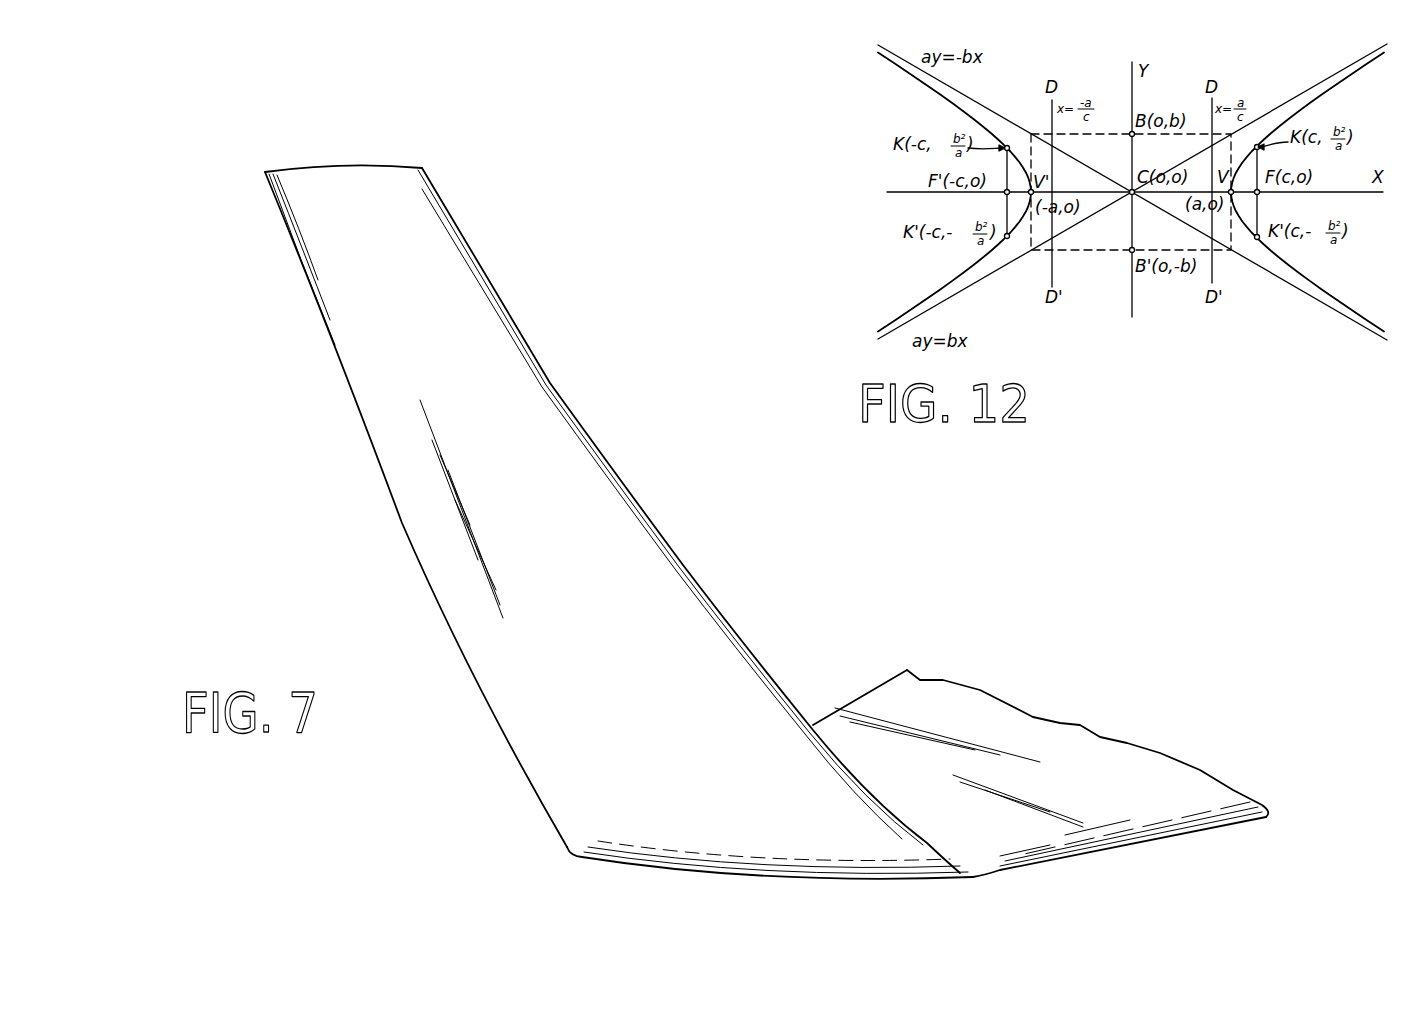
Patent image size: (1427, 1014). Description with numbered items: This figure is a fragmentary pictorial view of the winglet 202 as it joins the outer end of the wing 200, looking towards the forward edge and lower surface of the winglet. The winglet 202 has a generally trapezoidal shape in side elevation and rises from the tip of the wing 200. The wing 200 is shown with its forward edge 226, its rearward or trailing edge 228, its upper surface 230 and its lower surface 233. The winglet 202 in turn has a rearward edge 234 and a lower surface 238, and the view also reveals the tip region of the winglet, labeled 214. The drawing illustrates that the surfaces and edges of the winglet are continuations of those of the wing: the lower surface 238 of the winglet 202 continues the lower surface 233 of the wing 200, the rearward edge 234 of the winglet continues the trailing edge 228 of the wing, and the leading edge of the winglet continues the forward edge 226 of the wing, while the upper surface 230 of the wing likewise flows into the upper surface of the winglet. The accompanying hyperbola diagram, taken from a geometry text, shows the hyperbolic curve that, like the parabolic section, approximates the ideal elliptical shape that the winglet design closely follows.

The wing 200 is at (1040, 759).
The winglet 202 is at (619, 489).
The winglet tip edge 214 is at (393, 166).
The forward edge 226 is at (1213, 827).
The trailing edge 228 is at (872, 690).
The upper surface 230 is at (1120, 767).
The lower surface 233 is at (697, 578).
The rearward edge 234 is at (402, 523).
The lower surface 238 is at (515, 680).